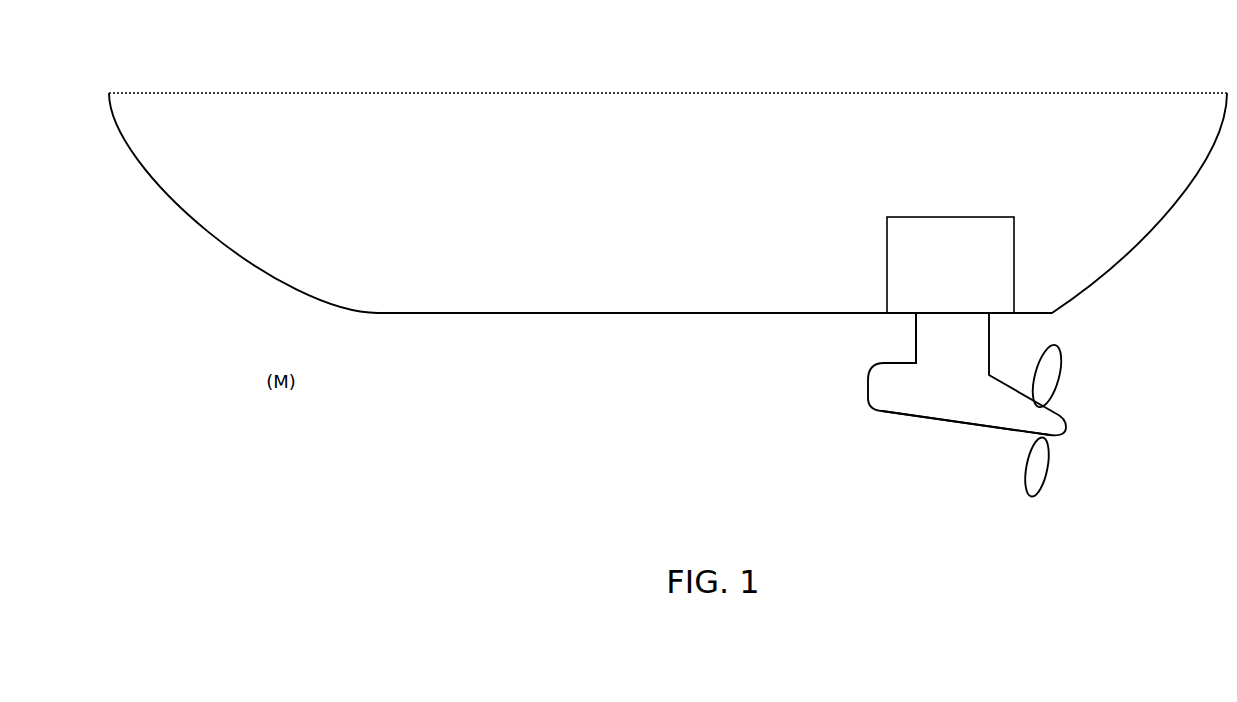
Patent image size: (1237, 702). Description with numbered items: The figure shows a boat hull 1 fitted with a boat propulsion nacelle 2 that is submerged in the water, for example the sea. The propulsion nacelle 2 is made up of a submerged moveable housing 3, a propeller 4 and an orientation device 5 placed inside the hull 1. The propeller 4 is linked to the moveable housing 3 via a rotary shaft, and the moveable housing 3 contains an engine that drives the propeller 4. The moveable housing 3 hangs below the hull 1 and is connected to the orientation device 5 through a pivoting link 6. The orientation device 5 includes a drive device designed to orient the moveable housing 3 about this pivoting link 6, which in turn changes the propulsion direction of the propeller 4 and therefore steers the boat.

The boat hull 1 is at (599, 91).
The boat propulsion nacelle 2 is at (866, 422).
The submerged moveable housing 3 is at (942, 425).
The propeller 4 is at (1068, 377).
The orientation device 5 is at (960, 215).
The pivoting link 6 is at (906, 318).